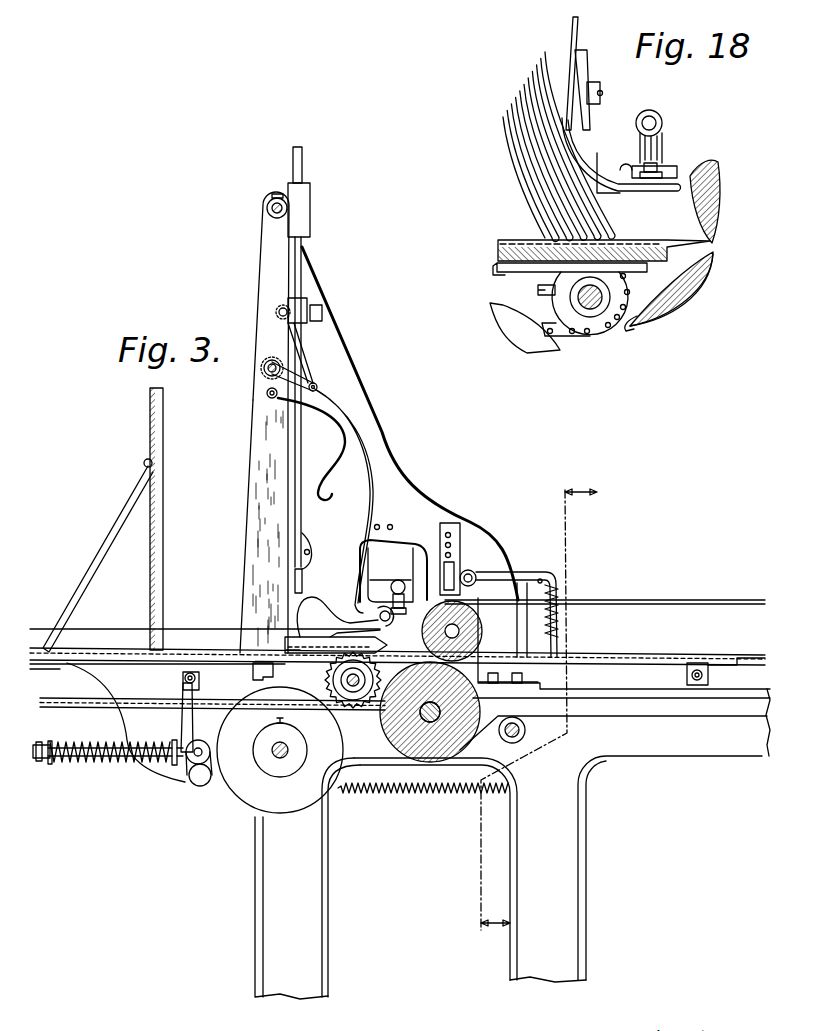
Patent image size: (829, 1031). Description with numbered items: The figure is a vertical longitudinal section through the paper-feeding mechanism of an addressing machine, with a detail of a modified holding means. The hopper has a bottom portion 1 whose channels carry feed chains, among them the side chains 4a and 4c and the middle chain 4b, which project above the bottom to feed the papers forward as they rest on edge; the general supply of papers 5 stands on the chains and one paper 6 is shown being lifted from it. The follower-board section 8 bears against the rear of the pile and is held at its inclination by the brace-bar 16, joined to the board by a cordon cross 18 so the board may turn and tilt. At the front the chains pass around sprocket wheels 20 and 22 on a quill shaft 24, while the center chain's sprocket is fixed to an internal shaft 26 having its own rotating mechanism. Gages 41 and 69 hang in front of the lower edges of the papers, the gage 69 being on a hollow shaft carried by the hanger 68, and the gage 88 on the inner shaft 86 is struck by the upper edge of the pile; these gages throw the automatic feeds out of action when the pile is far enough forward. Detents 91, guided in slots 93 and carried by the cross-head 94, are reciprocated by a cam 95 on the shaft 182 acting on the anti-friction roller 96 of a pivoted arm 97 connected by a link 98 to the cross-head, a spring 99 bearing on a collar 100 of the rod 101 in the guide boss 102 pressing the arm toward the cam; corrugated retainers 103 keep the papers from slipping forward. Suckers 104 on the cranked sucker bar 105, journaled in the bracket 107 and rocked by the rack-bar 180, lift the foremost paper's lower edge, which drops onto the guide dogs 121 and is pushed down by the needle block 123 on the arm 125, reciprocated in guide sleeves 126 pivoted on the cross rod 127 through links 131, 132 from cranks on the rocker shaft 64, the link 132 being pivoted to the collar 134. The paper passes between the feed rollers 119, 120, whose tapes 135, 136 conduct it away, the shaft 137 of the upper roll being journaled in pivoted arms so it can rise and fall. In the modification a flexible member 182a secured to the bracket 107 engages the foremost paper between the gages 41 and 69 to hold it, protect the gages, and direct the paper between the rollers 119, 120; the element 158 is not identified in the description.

In FIG. 3, the bottom portion 1 is at (108, 662).
In FIG. 3, the feed chain 4a is at (178, 645).
In FIG. 3, the middle feed chain 4b is at (95, 706).
In FIG. 18, the feed chain 4c is at (578, 333).
In FIG. 3, the general store or supply of papers 5 is at (536, 707).
In FIG. 18, the general store or supply of papers 5 is at (527, 191).
In FIG. 18, the paper 6 is at (599, 112).
In FIG. 3, the follower-board section 8 is at (160, 456).
In FIG. 3, the brace-bar 16 is at (109, 528).
In FIG. 3, the cordon cross 18 is at (144, 462).
In FIG. 3, the sprocket wheel 20 is at (345, 697).
In FIG. 18, the sprocket wheel 22 is at (540, 290).
In FIG. 3, the quill shaft 24 is at (351, 703).
In FIG. 3, the internal shaft 26 is at (352, 693).
In FIG. 18, the internal shaft 26 is at (592, 315).
In FIG. 18, the gage 41 is at (577, 46).
In FIG. 3, the rocker shaft 64 is at (263, 369).
In FIG. 3, the hanger 68 is at (279, 263).
In FIG. 3, the gage 69 is at (372, 487).
In FIG. 3, the internal shaft 86 is at (266, 394).
In FIG. 3, the gage 88 is at (350, 440).
In FIG. 3, the detents 91 is at (336, 644).
In FIG. 18, the detents 91 is at (610, 239).
In FIG. 18, the guide slot 93 is at (638, 258).
In FIG. 3, the cross-head 94 is at (258, 662).
In FIG. 3, the cam 95 is at (245, 800).
In FIG. 18, the cam 95 is at (527, 338).
In FIG. 3, the anti-friction roller 96 is at (211, 746).
In FIG. 3, the pivoted arm 97 is at (183, 722).
In FIG. 3, the link 98 is at (183, 680).
In FIG. 3, the spring 99 is at (105, 764).
In FIG. 3, the collar 100 is at (180, 768).
In FIG. 3, the rod 101 is at (143, 764).
In FIG. 3, the guide boss 102 is at (56, 765).
In FIG. 3, the retainers 103 is at (293, 650).
In FIG. 3, the suckers 104 is at (389, 622).
In FIG. 18, the suckers 104 is at (662, 150).
In FIG. 3, the manifold sucker pipe or bar 105 is at (400, 583).
In FIG. 18, the manifold sucker pipe or bar 105 is at (662, 121).
In FIG. 3, the bracket 107 is at (357, 560).
In FIG. 3, the upper feed roll 119 is at (472, 643).
In FIG. 18, the upper feed roll 119 is at (717, 195).
In FIG. 3, the lower feed roll 120 is at (407, 732).
In FIG. 18, the lower feed roll 120 is at (684, 298).
In FIG. 3, the guide dogs 121 is at (338, 617).
In FIG. 18, the guide dogs 121 is at (705, 277).
In FIG. 3, the needle block 123 is at (305, 582).
In FIG. 3, the arm 125 is at (303, 440).
In FIG. 3, the guide sleeves 126 is at (311, 225).
In FIG. 3, the cross rod 127 is at (266, 214).
In FIG. 3, the link 131 is at (293, 377).
In FIG. 3, the link 132 is at (302, 340).
In FIG. 3, the collar 134 is at (302, 300).
In FIG. 3, the tapes 135 is at (611, 600).
In FIG. 18, the tapes 135 is at (672, 170).
In FIG. 3, the tapes 136 is at (745, 664).
In FIG. 18, the tapes 136 is at (636, 327).
In FIG. 3, the shaft 137 is at (480, 648).
In FIG. 3, the pivot pin with arm 158 is at (474, 585).
In FIG. 3, the rack-bar 180 is at (446, 523).
In FIG. 3, the shaft 182 is at (275, 758).
In FIG. 18, the flexible member 182a is at (616, 157).